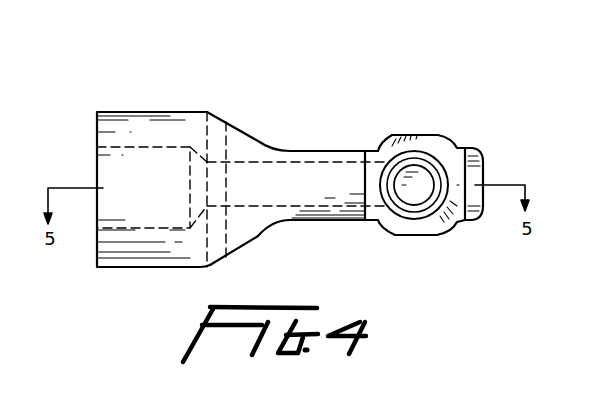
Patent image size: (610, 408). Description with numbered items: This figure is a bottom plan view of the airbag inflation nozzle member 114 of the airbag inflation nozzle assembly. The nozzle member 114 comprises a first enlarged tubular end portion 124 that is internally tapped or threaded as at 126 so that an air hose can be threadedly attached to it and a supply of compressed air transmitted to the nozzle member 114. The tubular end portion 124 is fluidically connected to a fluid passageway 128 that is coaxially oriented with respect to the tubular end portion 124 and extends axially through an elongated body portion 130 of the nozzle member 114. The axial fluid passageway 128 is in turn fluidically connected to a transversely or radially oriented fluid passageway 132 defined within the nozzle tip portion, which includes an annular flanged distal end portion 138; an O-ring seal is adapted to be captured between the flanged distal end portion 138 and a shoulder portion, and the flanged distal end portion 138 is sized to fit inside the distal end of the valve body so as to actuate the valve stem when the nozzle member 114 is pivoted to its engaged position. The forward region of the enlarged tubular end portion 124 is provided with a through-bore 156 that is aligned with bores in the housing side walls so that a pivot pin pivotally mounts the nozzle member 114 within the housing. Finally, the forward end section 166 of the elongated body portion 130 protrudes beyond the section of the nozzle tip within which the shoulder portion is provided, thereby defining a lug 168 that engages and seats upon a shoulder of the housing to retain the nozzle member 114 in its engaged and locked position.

The airbag inflation nozzle member 114 is at (255, 137).
The first enlarged tubular end portion 124 is at (147, 130).
The internal threads 126 is at (128, 184).
The fluid passageway 128 is at (312, 190).
The elongated body portion 130 is at (317, 148).
The transversely oriented fluid passageway 132 is at (417, 192).
The annular flanged distal end portion 138 is at (430, 146).
The through-bore 156 is at (213, 140).
The forward end section 166 is at (457, 148).
The lug 168 is at (483, 176).